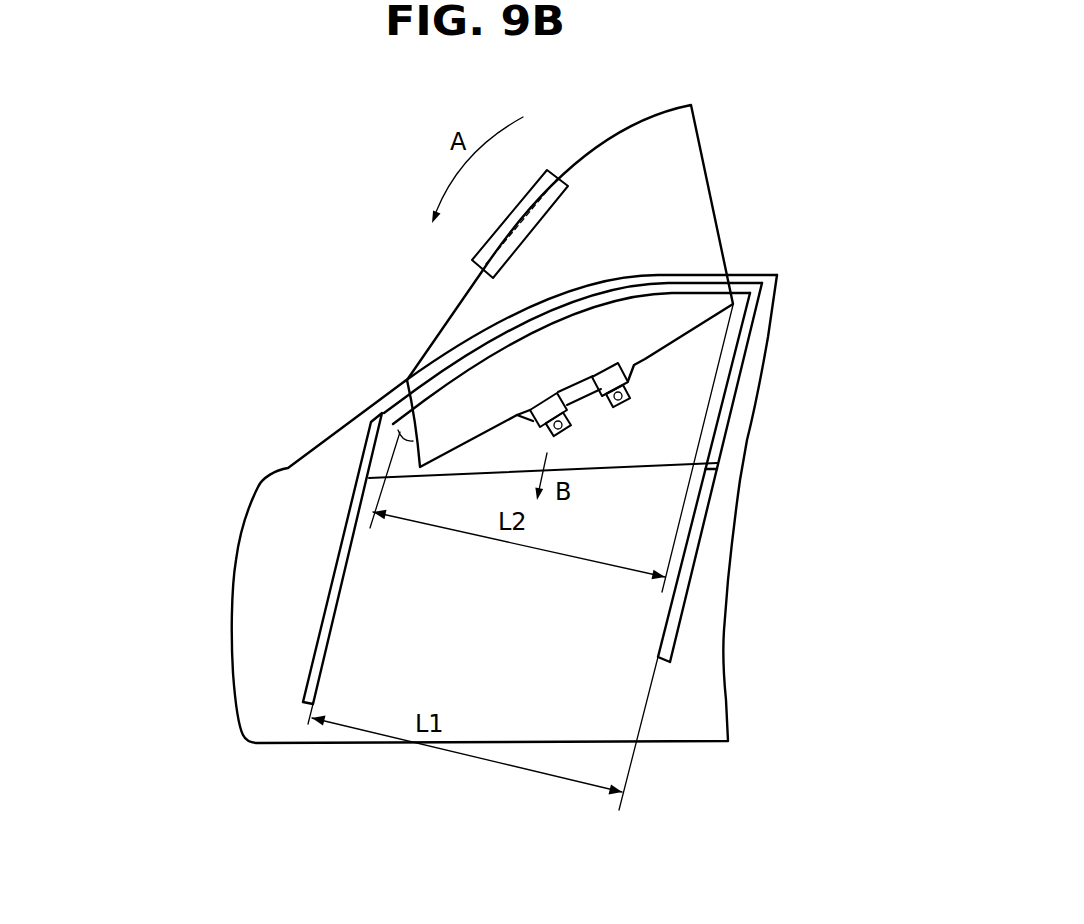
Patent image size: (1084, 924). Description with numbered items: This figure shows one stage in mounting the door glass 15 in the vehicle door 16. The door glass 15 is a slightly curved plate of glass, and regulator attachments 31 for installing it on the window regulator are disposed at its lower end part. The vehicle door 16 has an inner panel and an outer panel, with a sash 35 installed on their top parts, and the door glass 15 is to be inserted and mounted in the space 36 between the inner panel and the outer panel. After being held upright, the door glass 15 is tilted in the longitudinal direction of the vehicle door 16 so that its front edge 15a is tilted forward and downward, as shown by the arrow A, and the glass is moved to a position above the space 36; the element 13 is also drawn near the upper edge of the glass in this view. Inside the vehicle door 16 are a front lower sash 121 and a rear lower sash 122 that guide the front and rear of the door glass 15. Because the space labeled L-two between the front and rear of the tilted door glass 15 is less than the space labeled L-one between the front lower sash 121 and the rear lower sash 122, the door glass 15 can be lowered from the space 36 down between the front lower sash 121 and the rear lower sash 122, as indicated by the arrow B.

The hinge / pivot member 13 is at (560, 172).
The door glass 15 is at (670, 165).
The front edge 15a is at (398, 430).
The vehicle door 16 is at (288, 458).
The regulator attachments 31 is at (568, 426).
The sash 35 is at (770, 337).
The space 36 is at (605, 466).
The front lower sash 121 is at (322, 621).
The rear lower sash 122 is at (704, 541).